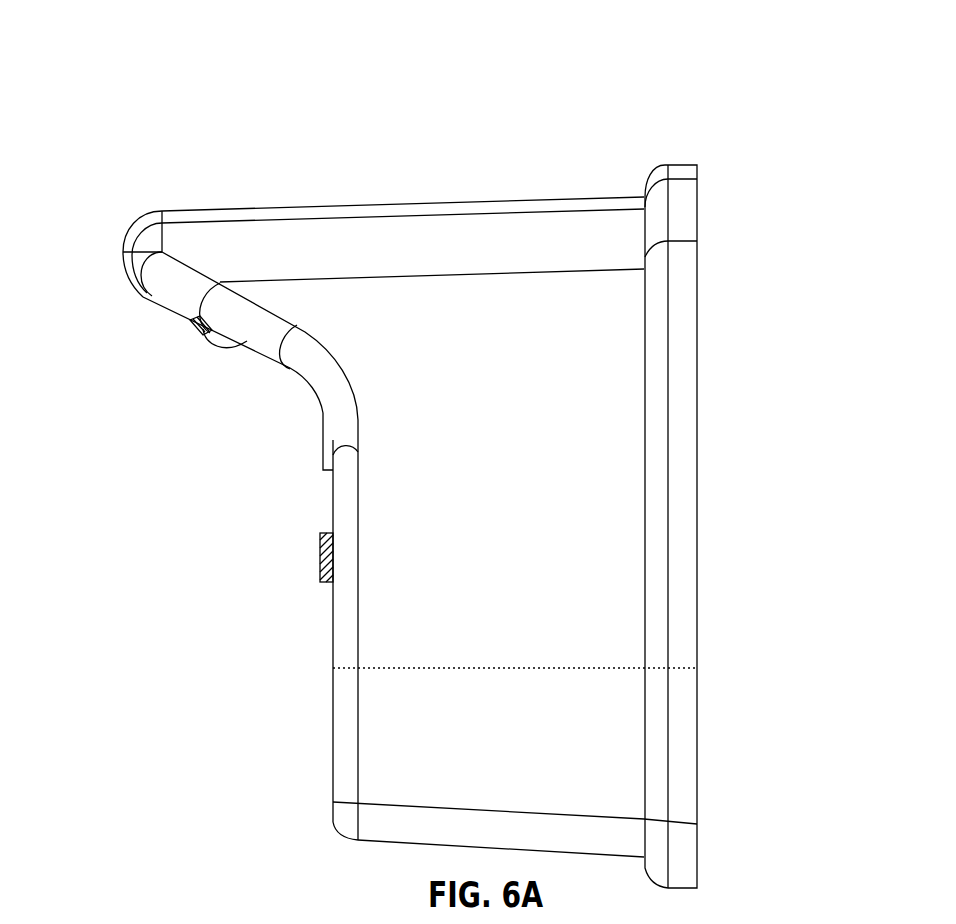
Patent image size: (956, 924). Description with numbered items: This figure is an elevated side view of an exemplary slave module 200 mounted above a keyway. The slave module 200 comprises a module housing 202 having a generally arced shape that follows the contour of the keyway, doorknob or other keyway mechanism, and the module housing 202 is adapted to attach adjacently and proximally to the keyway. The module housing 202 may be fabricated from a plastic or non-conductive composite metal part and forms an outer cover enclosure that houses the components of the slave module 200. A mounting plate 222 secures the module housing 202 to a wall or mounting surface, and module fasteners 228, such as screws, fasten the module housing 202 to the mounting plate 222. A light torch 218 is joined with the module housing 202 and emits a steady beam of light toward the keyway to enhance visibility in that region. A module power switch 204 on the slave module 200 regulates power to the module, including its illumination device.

The slave module 200 is at (140, 105).
The module housing 202 is at (255, 210).
The module power switch 204 is at (324, 438).
The light torch 218 is at (190, 318).
The mounting plate 222 is at (697, 175).
The module fasteners 228 is at (321, 557).